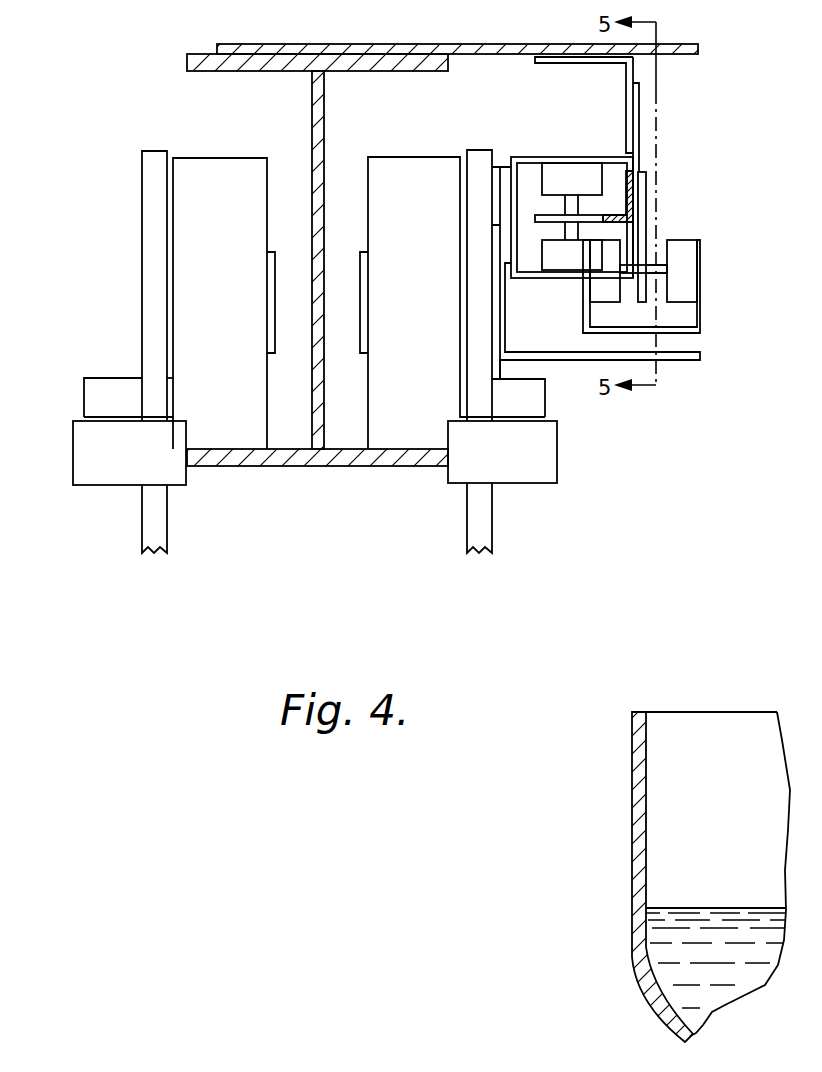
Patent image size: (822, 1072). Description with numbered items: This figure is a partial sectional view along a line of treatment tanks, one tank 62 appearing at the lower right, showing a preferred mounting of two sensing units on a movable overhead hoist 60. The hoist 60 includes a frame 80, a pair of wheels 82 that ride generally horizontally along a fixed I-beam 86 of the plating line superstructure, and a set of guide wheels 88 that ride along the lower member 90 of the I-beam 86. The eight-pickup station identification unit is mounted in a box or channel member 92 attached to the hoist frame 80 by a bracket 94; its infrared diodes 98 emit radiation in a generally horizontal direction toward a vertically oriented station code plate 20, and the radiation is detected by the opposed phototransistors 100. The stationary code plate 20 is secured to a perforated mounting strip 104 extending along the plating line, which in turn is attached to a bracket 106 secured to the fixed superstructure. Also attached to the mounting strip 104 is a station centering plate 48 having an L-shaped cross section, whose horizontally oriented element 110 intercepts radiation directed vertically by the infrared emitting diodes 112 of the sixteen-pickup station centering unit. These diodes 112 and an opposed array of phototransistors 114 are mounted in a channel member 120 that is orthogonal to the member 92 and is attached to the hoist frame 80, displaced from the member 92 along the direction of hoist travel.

The overhead hoist 60 is at (218, 130).
The I-beam 86 is at (325, 97).
The lower member 90 is at (383, 466).
The wheels 82 is at (246, 158).
The frame 80 is at (478, 150).
The guide wheels 88 is at (73, 457).
The bracket 94 is at (680, 362).
The channel member 120 is at (530, 157).
The infrared emitting diodes 112 is at (572, 195).
The element 110 is at (555, 222).
The phototransistors 114 is at (570, 240).
The station centering plate 48 is at (626, 178).
The bracket 106 is at (625, 72).
The perforated mounting strip 104 is at (640, 118).
The station code plate 20 is at (638, 283).
The infrared diodes 98 is at (637, 265).
The phototransistors 100 is at (663, 265).
The channel member 92 is at (703, 255).
The tank 62 is at (632, 772).